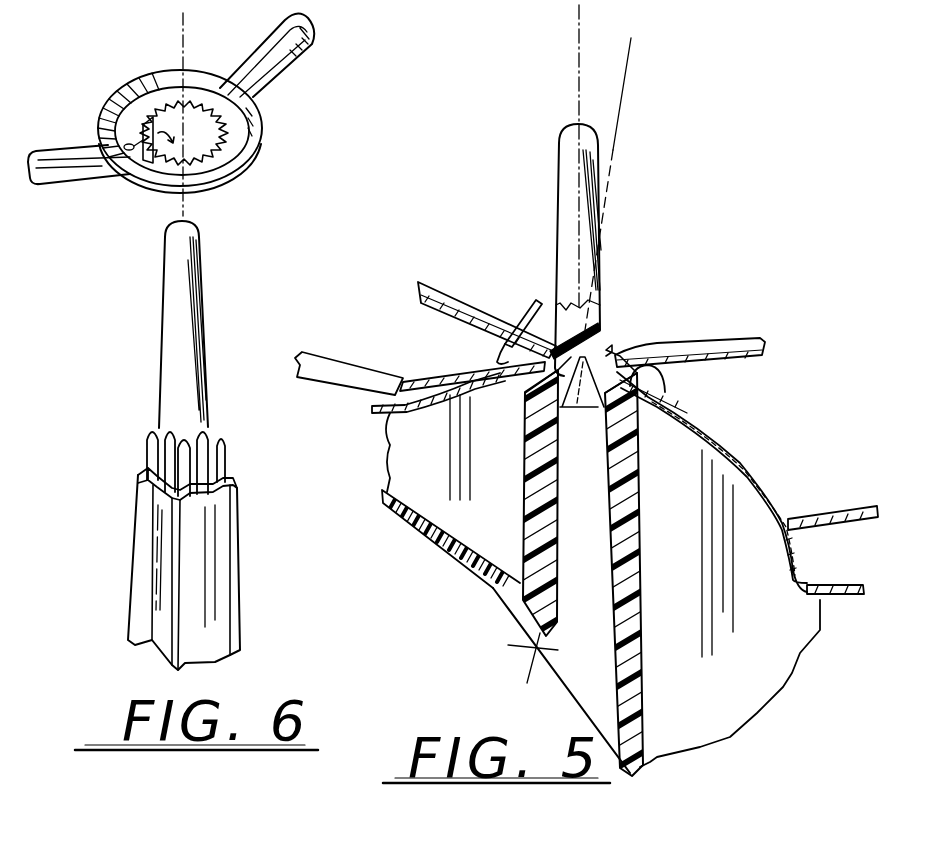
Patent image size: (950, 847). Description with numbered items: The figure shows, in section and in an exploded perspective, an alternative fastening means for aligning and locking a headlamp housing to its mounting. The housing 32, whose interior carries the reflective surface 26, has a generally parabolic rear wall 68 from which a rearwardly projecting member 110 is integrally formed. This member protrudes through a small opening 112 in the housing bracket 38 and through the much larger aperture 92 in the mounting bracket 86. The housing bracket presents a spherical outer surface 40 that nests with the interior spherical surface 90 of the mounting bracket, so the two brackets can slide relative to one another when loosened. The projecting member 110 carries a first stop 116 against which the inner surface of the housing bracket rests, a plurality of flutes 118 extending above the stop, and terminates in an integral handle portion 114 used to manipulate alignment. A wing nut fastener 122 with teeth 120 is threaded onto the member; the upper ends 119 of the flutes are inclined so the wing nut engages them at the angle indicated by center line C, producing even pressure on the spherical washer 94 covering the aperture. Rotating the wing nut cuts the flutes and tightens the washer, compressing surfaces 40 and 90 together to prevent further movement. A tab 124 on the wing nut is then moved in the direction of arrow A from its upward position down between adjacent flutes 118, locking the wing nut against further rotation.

In FIG. 5, the reflective surface 26 is at (486, 591).
In FIG. 5, the housing 32 is at (427, 532).
In FIG. 5, the housing bracket 38 is at (380, 418).
In FIG. 5, the outer surface 40 is at (795, 562).
In FIG. 5, the rear wall 68 is at (460, 540).
In FIG. 5, the mounting bracket 86 is at (800, 523).
In FIG. 5, the interior spherical surface 90 is at (743, 463).
In FIG. 5, the aperture 92 is at (665, 397).
In FIG. 5, the spherical washer 94 is at (507, 353).
In FIG. 6, the rearwardly projecting member 110 is at (212, 563).
In FIG. 5, the rearwardly projecting member 110 is at (640, 593).
In FIG. 5, the small opening 112 is at (540, 388).
In FIG. 6, the handle portion 114 is at (170, 259).
In FIG. 5, the handle portion 114 is at (572, 137).
In FIG. 6, the first stop 116 is at (237, 486).
In FIG. 6, the flutes 118 is at (152, 433).
In FIG. 5, the flutes 118 is at (603, 340).
In FIG. 5, the upper ends 119 is at (602, 327).
In FIG. 6, the teeth 120 is at (187, 117).
In FIG. 6, the wing nut fastener 122 is at (258, 107).
In FIG. 5, the wing nut fastener 122 is at (498, 310).
In FIG. 6, the tab 124 is at (134, 142).
In FIG. 6, the arrow A is at (164, 124).
In FIG. 5, the center line C is at (627, 82).